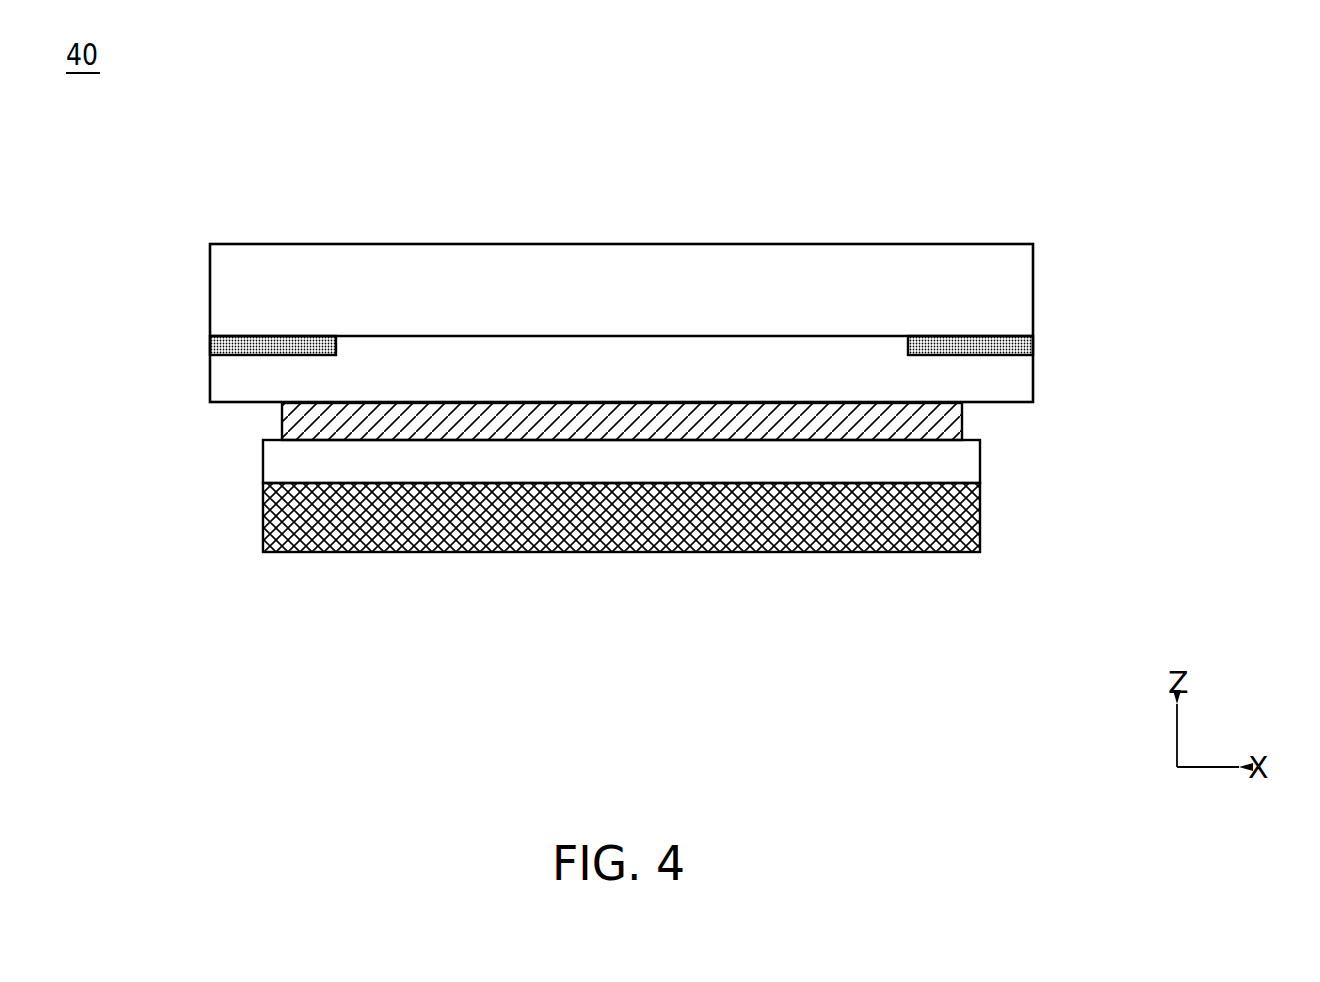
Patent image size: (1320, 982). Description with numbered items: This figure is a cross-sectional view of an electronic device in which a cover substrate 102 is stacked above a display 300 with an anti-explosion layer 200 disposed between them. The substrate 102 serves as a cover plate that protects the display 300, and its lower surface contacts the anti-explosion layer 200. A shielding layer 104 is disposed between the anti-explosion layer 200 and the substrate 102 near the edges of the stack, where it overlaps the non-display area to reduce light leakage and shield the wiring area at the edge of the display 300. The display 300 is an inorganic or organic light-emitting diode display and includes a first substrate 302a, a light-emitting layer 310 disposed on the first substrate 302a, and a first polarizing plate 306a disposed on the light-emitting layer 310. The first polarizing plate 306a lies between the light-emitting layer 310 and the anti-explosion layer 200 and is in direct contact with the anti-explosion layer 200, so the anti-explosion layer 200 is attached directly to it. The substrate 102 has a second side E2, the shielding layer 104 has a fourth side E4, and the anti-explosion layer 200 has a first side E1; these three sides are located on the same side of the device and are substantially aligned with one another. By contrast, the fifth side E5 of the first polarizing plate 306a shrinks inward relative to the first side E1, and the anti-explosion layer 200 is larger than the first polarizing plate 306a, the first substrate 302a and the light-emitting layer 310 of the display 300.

The substrate 102 is at (233, 290).
The shielding layer 104 is at (233, 344).
The anti-explosion layer 200 is at (233, 379).
The display 300 is at (656, 478).
The first polarizing plate 306a is at (940, 428).
The light-emitting layer 310 is at (938, 466).
The first substrate 302a is at (980, 514).
The first side E1 is at (1036, 381).
The second side E2 is at (1036, 291).
The fourth side E4 is at (1036, 346).
The fifth side E5 is at (965, 414).